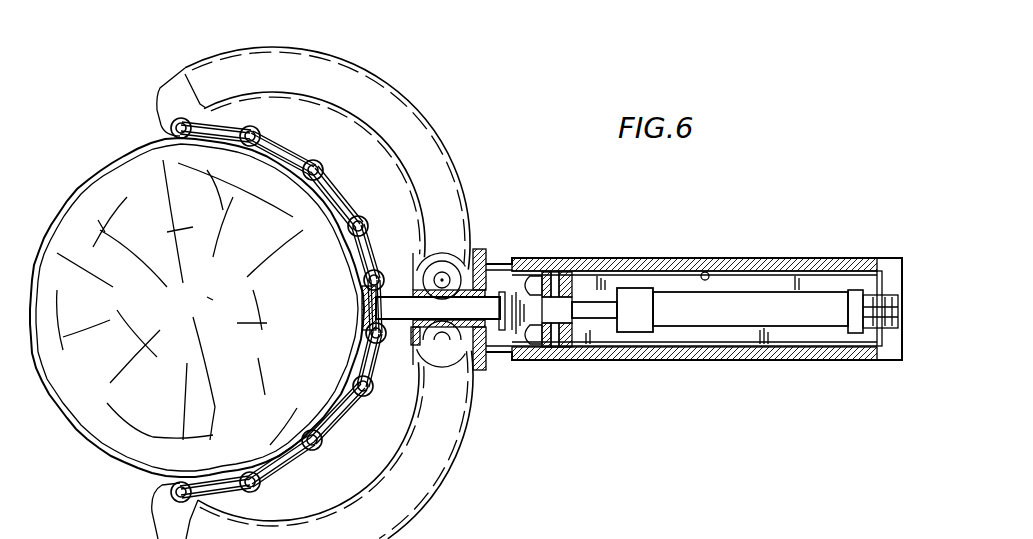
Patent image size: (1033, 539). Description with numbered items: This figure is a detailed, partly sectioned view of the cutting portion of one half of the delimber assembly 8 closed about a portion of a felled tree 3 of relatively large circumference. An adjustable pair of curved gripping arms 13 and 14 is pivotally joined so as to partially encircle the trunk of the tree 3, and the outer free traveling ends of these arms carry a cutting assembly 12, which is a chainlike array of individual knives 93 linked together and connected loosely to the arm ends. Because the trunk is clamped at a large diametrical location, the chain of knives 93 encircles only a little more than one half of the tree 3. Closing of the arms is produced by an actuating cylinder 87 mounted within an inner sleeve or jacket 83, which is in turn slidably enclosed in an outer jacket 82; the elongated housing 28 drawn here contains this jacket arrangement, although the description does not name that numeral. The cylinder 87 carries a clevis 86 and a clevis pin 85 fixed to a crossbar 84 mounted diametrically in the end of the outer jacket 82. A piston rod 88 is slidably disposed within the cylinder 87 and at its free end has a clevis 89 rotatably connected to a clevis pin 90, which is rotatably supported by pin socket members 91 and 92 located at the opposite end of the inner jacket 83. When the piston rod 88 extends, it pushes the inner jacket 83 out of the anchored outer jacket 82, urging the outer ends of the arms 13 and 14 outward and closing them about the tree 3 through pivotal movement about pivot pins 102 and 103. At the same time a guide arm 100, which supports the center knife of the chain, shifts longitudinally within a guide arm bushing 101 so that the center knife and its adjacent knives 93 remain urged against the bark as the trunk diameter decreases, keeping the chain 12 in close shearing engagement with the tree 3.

The tree 3 is at (92, 447).
The delimber assembly 8 is at (397, 235).
The cutting assembly 12 is at (332, 427).
The gripping arm 13 is at (421, 112).
The gripping arm 14 is at (423, 503).
The cylinder housing 28 is at (645, 258).
The outer jacket 82 is at (752, 258).
The inner jacket 83 is at (707, 273).
The crossbar 84 is at (877, 322).
The clevis pin 85 is at (879, 348).
The clevis 86 is at (890, 296).
The actuating cylinder 87 is at (740, 326).
The piston rod 88 is at (592, 318).
The clevis 89 is at (555, 345).
The clevis pin 90 is at (573, 288).
The pin socket member 91 is at (535, 290).
The pin socket member 92 is at (536, 330).
The knife 93 is at (292, 463).
The guide arm 100 is at (400, 293).
The guide arm bushing 101 is at (413, 322).
The pivot pin 102 is at (448, 274).
The pivot pin 103 is at (454, 356).